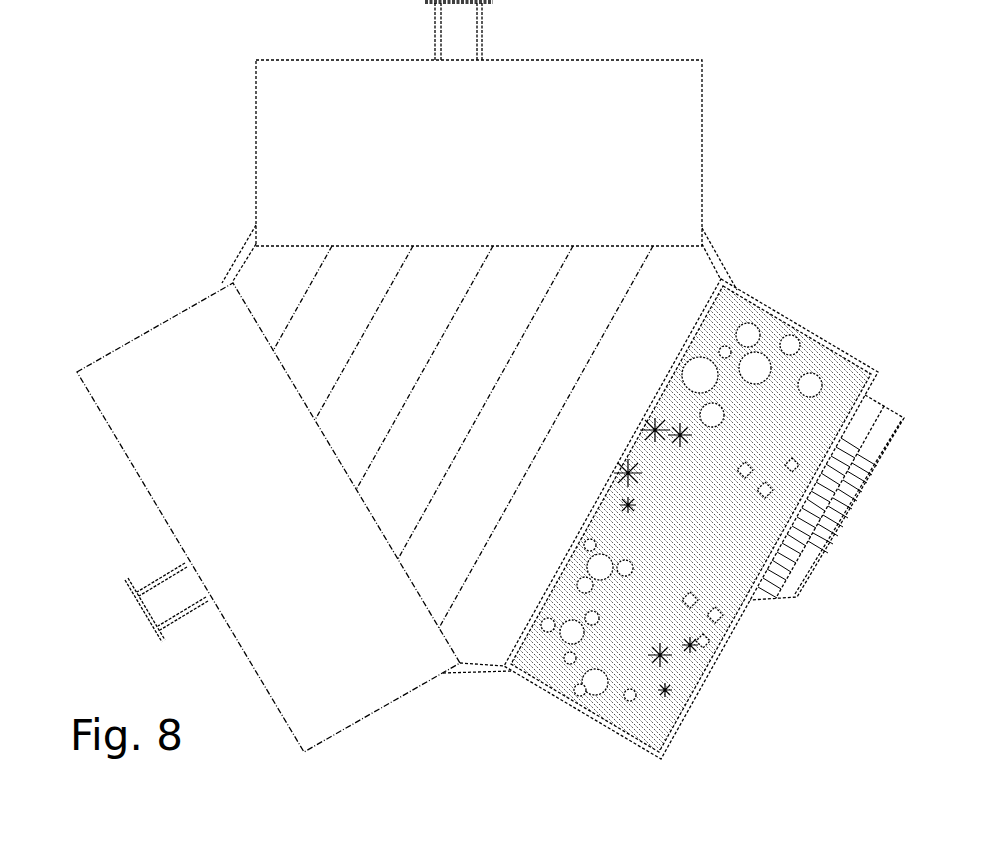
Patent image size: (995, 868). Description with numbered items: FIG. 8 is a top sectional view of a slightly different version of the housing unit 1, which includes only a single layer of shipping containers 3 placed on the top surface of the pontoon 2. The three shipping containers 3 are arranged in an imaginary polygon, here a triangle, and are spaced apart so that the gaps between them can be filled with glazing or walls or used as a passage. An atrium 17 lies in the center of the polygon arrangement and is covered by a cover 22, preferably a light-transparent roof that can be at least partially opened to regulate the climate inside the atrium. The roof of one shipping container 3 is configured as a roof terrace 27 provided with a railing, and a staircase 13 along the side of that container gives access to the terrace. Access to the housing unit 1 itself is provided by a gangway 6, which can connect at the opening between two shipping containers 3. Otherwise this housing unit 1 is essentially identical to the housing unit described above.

The housing unit 1 is at (166, 106).
The pontoon 2 is at (718, 260).
The shipping container 3 is at (672, 158).
The gangway 6 is at (468, 33).
The staircase 13 is at (795, 572).
The atrium 17 is at (257, 278).
The cover 22 is at (471, 397).
The roof terrace 27 is at (699, 559).